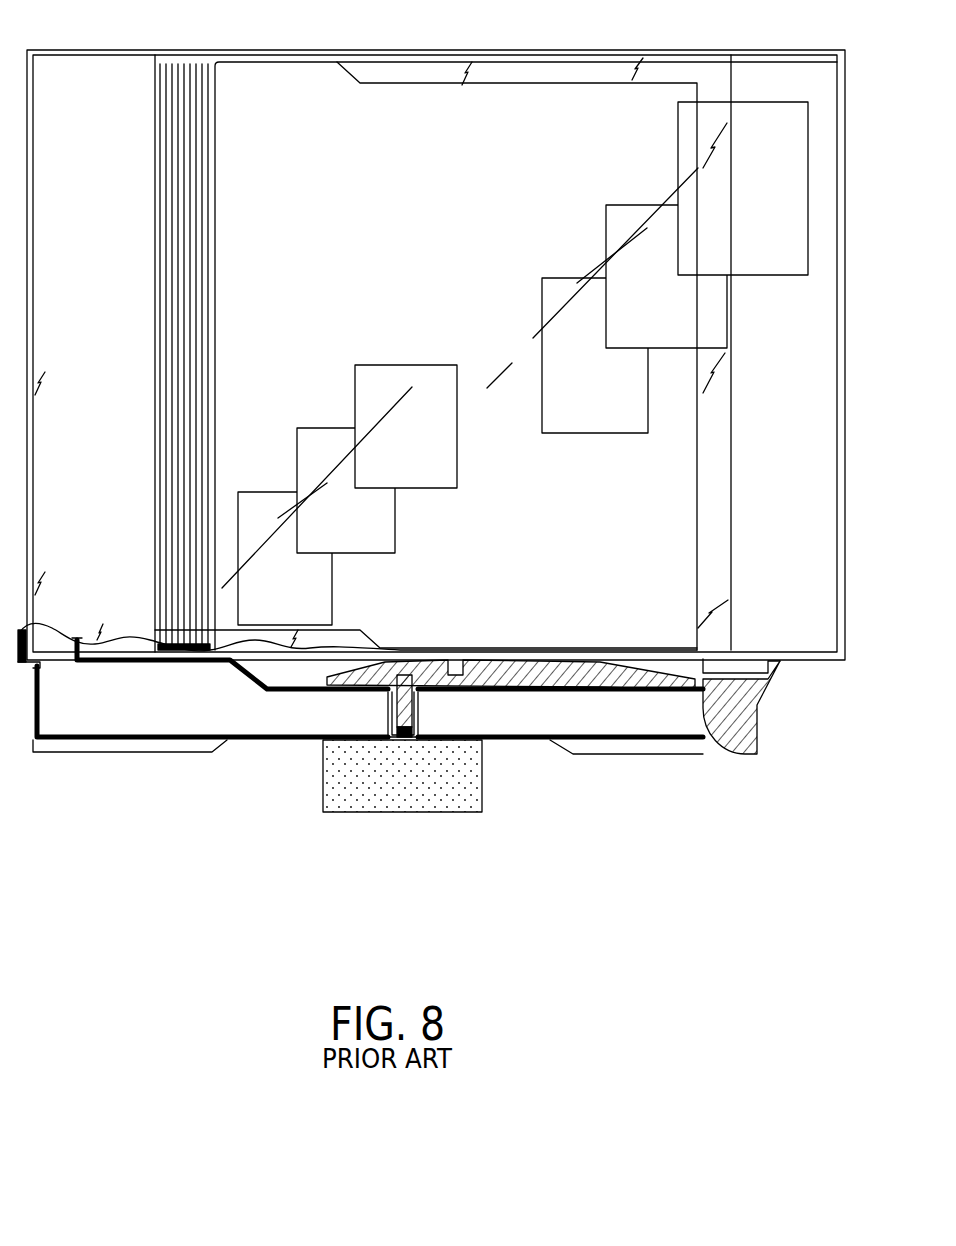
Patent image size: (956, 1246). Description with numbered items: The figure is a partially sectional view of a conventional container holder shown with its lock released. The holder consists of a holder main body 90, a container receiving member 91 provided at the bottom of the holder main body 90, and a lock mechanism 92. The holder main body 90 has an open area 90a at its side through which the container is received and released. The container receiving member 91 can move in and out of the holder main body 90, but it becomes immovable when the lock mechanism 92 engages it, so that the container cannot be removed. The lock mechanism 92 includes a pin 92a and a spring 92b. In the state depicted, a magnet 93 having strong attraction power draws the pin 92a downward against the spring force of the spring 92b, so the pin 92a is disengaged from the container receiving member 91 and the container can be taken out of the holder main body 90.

The holder main body 90 is at (568, 72).
The open area 90a is at (737, 417).
The container receiving member 91 is at (750, 700).
The lock mechanism 92 is at (524, 771).
The pin 92a is at (418, 706).
The spring 92b is at (418, 727).
The magnet 93 is at (363, 780).